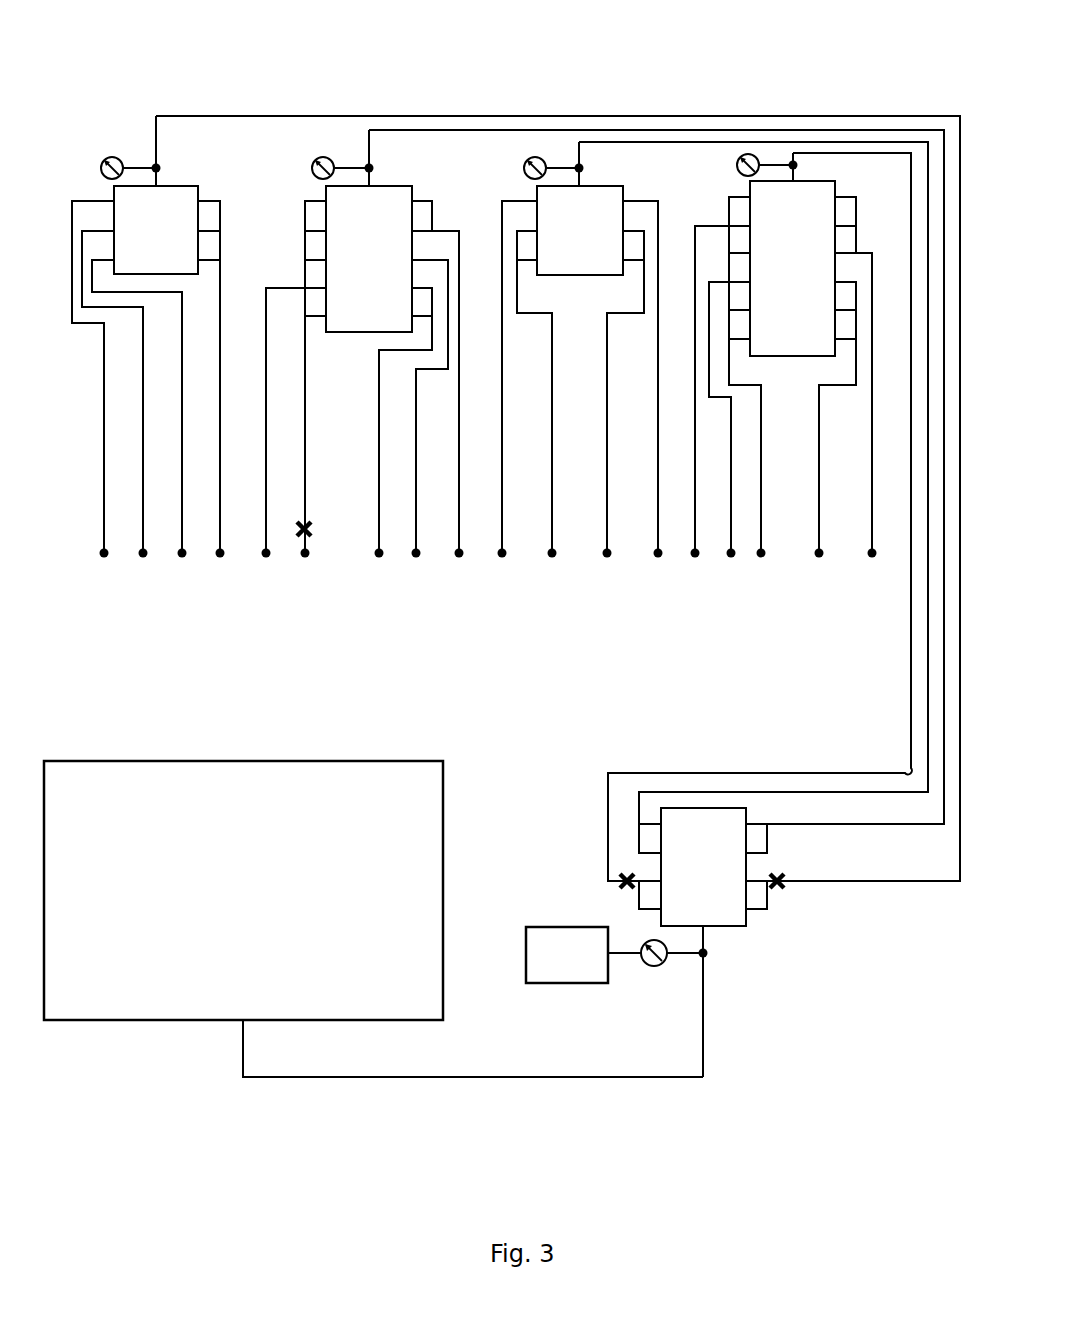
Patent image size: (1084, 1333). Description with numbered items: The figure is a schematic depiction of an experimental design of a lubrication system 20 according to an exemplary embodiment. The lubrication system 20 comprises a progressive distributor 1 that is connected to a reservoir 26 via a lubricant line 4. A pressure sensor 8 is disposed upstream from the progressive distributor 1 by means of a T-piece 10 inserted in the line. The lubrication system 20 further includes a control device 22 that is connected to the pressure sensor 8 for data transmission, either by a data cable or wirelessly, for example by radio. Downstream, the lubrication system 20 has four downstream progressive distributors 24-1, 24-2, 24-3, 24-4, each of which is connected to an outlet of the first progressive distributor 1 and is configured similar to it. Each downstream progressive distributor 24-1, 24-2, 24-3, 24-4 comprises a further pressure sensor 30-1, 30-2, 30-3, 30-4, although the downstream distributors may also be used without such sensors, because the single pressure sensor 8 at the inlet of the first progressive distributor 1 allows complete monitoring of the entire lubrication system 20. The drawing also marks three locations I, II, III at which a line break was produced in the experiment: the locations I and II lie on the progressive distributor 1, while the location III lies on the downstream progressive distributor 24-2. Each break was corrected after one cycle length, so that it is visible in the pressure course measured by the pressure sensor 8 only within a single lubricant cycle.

The lubrication system 20 is at (873, 78).
The downstream progressive distributor 24-1 is at (185, 205).
The downstream progressive distributor 24-2 is at (393, 205).
The downstream progressive distributor 24-3 is at (609, 205).
The downstream progressive distributor 24-4 is at (823, 205).
The further pressure sensor 30-1 is at (100, 166).
The further pressure sensor 30-2 is at (312, 166).
The further pressure sensor 30-3 is at (524, 166).
The further pressure sensor 30-4 is at (737, 163).
The reservoir 26 is at (403, 776).
The progressive distributor 1 is at (793, 907).
The location of line break I is at (615, 878).
The location of line break II is at (787, 877).
The location of line break III is at (310, 532).
The control device 22 is at (525, 968).
The pressure sensor 8 is at (654, 966).
The T-piece 10 is at (707, 957).
The lubricant line 4 is at (658, 1077).